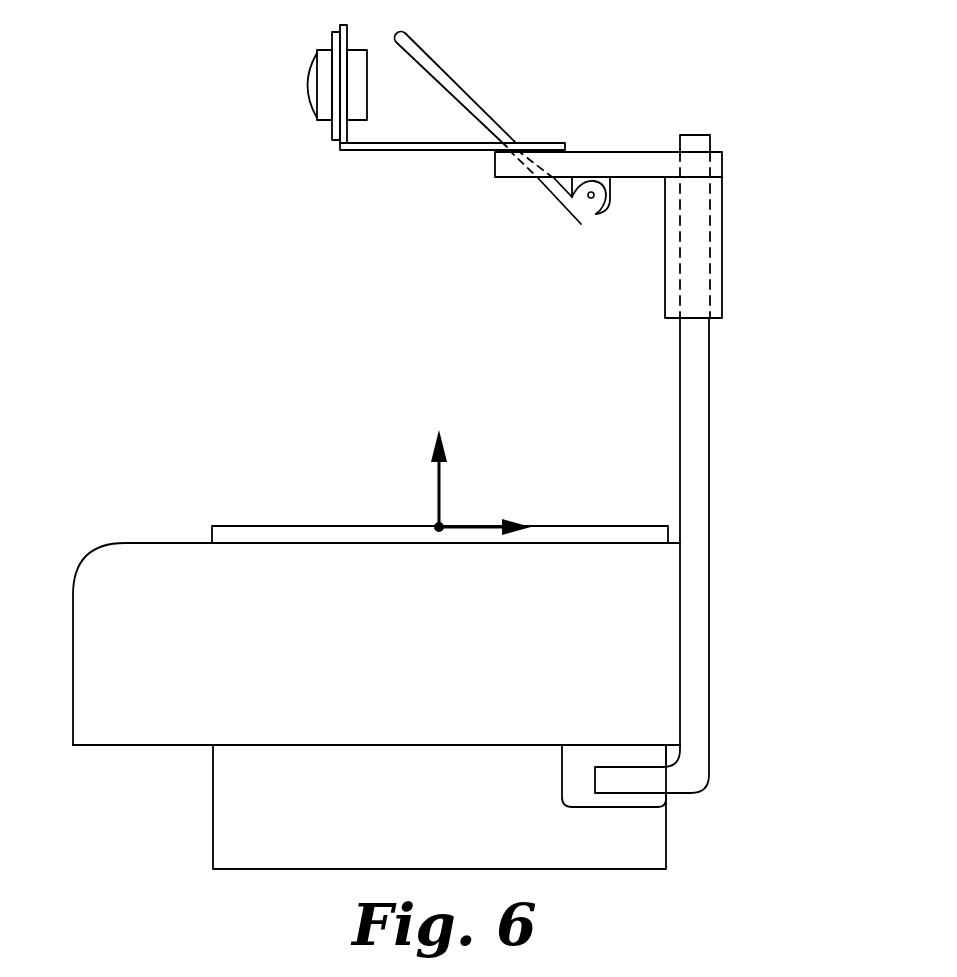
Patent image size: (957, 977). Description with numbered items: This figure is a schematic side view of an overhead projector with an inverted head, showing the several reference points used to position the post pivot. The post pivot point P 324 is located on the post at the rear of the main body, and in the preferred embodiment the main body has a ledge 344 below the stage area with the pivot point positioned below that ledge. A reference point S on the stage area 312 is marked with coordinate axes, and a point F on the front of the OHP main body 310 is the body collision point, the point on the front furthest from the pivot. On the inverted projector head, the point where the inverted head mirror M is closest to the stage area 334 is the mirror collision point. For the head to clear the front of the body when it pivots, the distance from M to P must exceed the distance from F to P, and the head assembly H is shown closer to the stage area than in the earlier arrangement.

The point on the front of the OHP main body 310 is at (72, 573).
The reference point on the stage area 312 is at (439, 527).
The point where the inverted head mirror is closest to the stage area 334 is at (585, 228).
The post pivot point 324 is at (610, 782).
The ledge 344 is at (120, 745).
The head assembly H is at (313, 123).